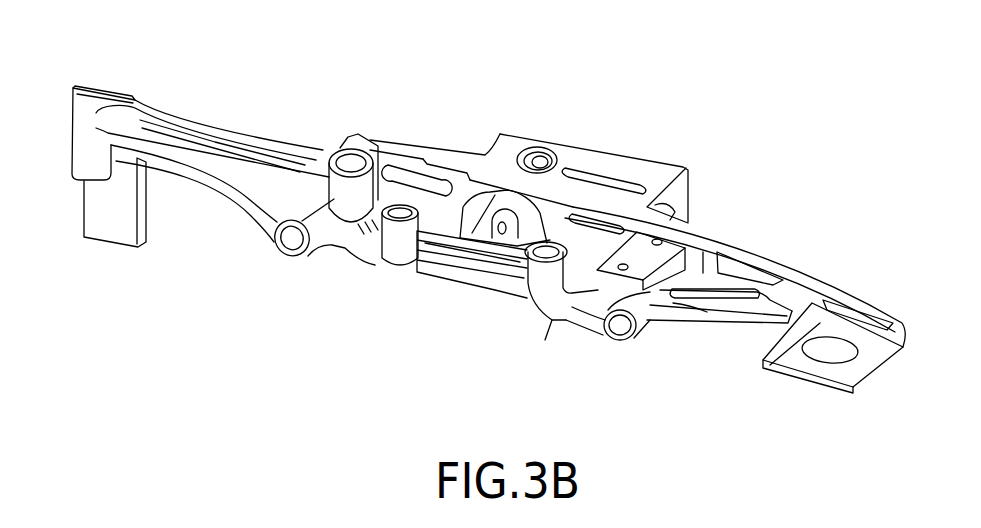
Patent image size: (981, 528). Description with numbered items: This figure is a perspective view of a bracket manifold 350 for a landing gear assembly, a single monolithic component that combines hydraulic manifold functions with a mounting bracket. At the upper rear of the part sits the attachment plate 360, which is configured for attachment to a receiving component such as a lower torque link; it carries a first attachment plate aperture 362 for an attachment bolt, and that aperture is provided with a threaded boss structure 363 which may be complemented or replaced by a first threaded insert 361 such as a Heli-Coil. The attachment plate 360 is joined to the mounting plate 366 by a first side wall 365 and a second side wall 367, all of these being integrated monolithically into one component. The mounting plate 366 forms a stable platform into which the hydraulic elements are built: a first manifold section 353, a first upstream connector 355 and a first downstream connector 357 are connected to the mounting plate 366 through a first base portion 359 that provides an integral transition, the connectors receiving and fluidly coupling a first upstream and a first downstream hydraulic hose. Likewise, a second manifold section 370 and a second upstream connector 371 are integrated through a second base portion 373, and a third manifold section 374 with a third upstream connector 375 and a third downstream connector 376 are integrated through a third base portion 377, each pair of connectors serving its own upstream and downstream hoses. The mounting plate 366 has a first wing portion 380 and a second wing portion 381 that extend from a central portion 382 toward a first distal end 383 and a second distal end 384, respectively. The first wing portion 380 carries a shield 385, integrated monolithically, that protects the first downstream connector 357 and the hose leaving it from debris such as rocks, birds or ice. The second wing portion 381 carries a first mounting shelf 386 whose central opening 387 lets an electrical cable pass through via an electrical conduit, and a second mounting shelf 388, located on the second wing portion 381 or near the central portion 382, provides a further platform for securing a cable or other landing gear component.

The bracket manifold 350 is at (62, 94).
The first manifold section 353 is at (205, 160).
The first upstream connector 355 is at (330, 157).
The first downstream connector 357 is at (82, 158).
The first base portion 359 is at (190, 133).
The attachment plate 360 is at (678, 160).
The first threaded insert 361 is at (530, 158).
The first attachment plate aperture 362 is at (548, 168).
The threaded boss structure 363 is at (542, 160).
The first side wall 365 is at (672, 192).
The mounting plate 366 is at (388, 152).
The second side wall 367 is at (515, 143).
The second manifold section 370 is at (357, 243).
The second upstream connector 371 is at (400, 283).
The second base portion 373 is at (300, 260).
The third manifold section 374 is at (582, 315).
The third upstream connector 375 is at (635, 322).
The third downstream connector 376 is at (530, 292).
The third base portion 377 is at (552, 322).
The first wing portion 380 is at (164, 92).
The second wing portion 381 is at (823, 248).
The central portion 382 is at (462, 295).
The first distal end 383 is at (139, 82).
The second distal end 384 is at (855, 262).
The shield 385 is at (102, 222).
The first mounting shelf 386 is at (770, 362).
The central opening 387 is at (820, 362).
The second mounting shelf 388 is at (710, 232).